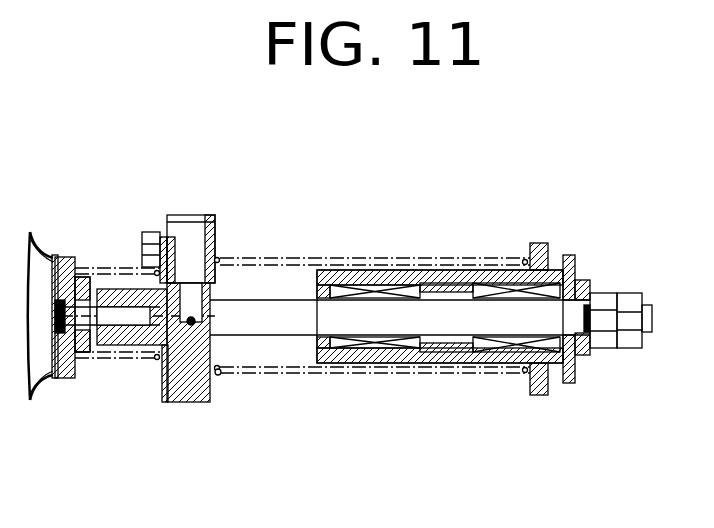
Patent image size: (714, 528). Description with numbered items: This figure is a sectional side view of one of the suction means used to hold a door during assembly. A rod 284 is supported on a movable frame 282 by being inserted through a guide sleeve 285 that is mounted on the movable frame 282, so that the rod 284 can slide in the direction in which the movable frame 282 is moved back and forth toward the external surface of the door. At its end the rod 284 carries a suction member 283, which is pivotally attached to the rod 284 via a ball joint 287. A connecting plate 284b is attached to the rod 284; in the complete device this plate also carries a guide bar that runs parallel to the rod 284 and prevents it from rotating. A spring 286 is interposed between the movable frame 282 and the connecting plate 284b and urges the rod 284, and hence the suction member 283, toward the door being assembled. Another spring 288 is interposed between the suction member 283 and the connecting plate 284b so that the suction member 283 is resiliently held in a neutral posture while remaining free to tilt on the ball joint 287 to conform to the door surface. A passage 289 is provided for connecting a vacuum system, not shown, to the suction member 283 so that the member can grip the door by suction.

The movable frame 282 is at (547, 243).
The suction member 283 is at (52, 247).
The rod 284 is at (295, 325).
The connecting plate 284b is at (183, 393).
The guide sleeve 285 is at (430, 360).
The spring 286 is at (219, 375).
The ball joint 287 is at (62, 378).
The spring 288 is at (88, 276).
The passage 289 is at (193, 226).